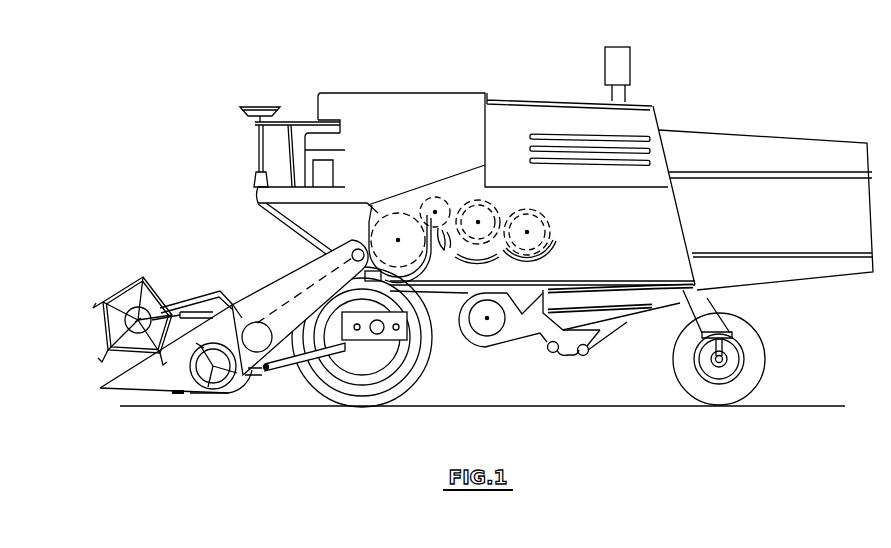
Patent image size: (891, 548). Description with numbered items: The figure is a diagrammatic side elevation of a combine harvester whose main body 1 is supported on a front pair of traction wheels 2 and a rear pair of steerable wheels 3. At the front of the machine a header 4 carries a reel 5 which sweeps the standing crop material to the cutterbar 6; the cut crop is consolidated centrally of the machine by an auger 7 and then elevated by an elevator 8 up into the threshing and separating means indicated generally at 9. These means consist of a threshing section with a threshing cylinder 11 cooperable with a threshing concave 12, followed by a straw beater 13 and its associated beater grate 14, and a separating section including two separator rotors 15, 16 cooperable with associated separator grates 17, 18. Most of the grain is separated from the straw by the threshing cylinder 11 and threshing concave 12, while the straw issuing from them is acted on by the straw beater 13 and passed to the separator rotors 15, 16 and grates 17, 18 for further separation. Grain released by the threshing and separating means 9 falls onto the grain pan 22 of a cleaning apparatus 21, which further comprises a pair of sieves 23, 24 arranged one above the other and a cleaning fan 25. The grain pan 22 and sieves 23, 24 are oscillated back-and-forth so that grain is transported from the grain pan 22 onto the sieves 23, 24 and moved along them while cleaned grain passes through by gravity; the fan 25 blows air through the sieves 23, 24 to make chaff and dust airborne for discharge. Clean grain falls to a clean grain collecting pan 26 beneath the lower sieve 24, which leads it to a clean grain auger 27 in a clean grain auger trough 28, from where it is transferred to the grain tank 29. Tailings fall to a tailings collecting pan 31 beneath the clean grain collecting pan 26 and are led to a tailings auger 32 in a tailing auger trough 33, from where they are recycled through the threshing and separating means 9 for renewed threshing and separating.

The main body 1 is at (452, 300).
The traction wheels 2 is at (407, 381).
The steerable wheels 3 is at (766, 358).
The header 4 is at (245, 382).
The reel 5 is at (112, 298).
The cutterbar 6 is at (181, 394).
The auger 7 is at (200, 394).
The elevator 8 is at (263, 292).
The threshing and separating means 9 is at (452, 168).
The threshing cylinder 11 is at (378, 218).
The threshing concave 12 is at (437, 303).
The straw beater 13 is at (431, 197).
The beater grate 14 is at (441, 240).
The separator rotor 15 is at (490, 204).
The separator rotor 16 is at (548, 221).
The separator grate 17 is at (478, 253).
The separator grate 18 is at (557, 240).
The cleaning apparatus 21 is at (645, 272).
The grain pan 22 is at (532, 278).
The sieve 23 is at (597, 290).
The sieve 24 is at (652, 284).
The cleaning fan 25 is at (481, 349).
The clean grain collecting pan 26 is at (627, 322).
The clean grain auger 27 is at (540, 347).
The clean grain auger trough 28 is at (553, 353).
The grain tank 29 is at (373, 92).
The tailings collecting pan 31 is at (653, 311).
The tailings auger 32 is at (588, 345).
The tailing auger trough 33 is at (583, 356).